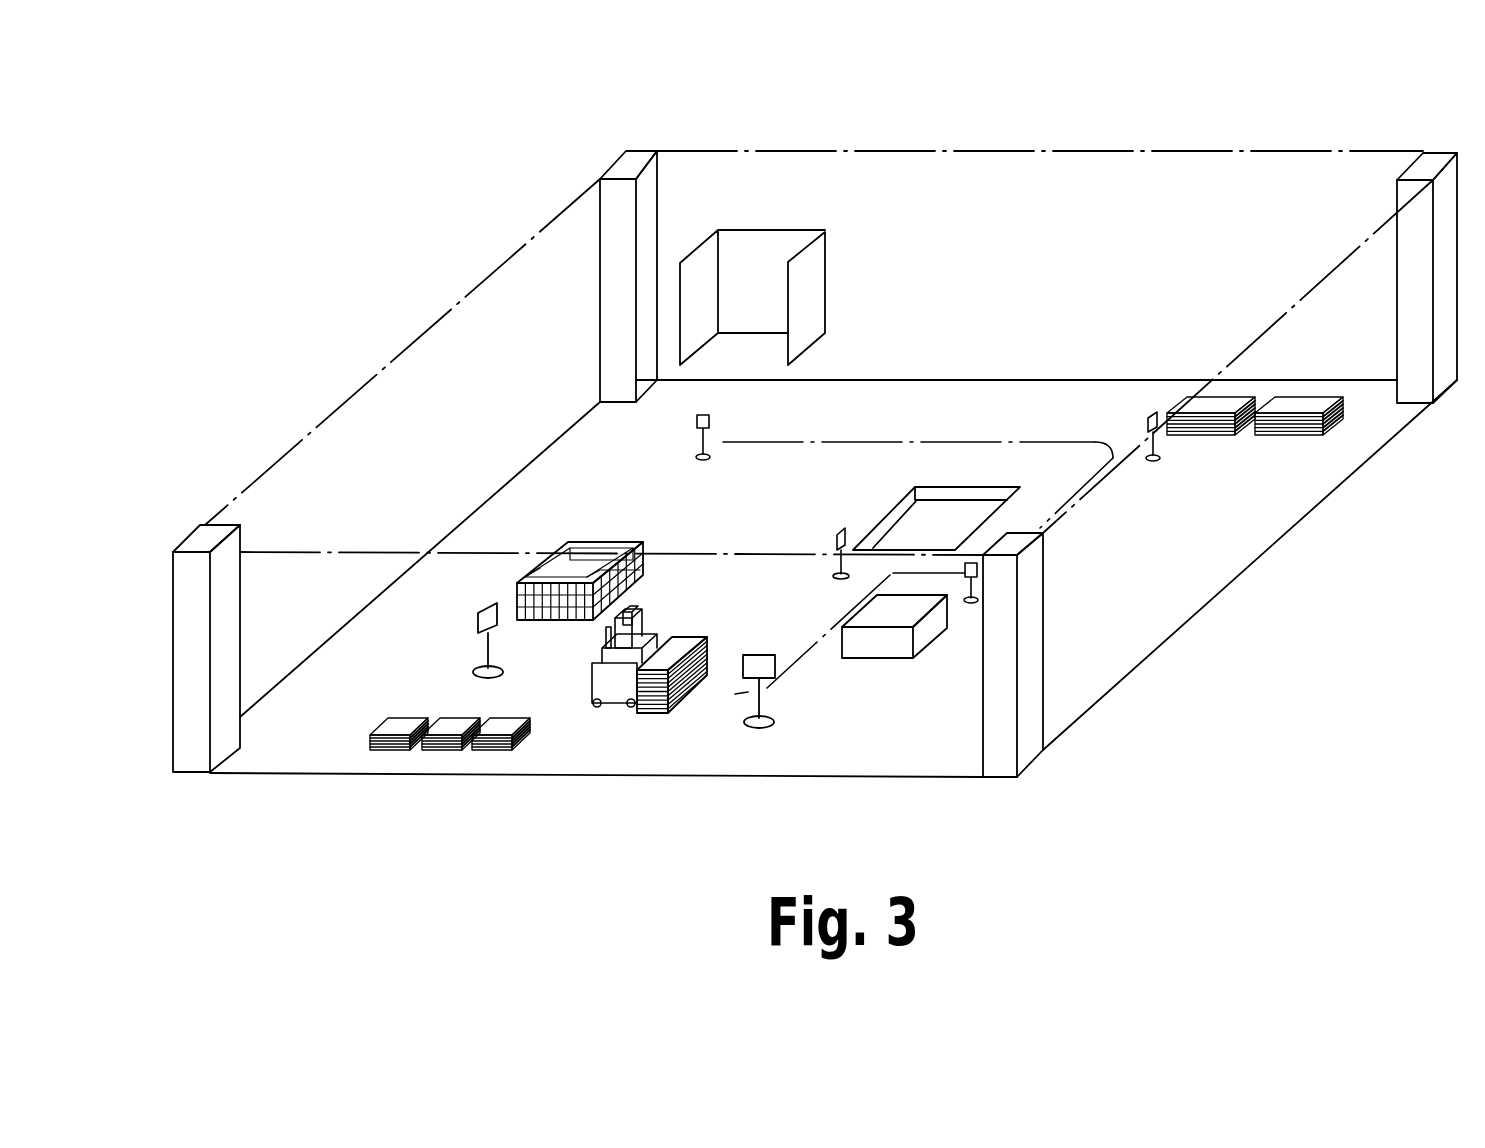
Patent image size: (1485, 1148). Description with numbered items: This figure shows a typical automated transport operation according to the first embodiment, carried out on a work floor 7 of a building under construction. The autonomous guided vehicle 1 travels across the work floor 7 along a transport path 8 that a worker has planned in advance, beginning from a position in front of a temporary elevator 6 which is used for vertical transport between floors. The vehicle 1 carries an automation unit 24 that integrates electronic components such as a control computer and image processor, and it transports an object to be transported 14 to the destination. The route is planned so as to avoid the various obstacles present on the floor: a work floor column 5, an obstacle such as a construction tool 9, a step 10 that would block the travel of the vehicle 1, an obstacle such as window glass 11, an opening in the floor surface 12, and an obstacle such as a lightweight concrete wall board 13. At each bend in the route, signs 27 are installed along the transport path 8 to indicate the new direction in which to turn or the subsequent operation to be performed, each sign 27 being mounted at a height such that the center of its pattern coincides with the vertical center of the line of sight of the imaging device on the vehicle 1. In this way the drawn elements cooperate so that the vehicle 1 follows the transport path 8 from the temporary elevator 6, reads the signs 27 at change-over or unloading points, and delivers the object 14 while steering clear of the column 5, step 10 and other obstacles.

The autonomous guided vehicle 1 is at (622, 685).
The work floor column 5 is at (1045, 662).
The temporary elevator 6 is at (743, 230).
The work floor 7 is at (1088, 400).
The transport path 8 is at (983, 442).
The obstacle such as a construction tool 9 is at (600, 542).
The step 10 is at (880, 660).
The obstacle such as window glass 11 is at (383, 752).
The opening in the floor surface 12 is at (878, 522).
The obstacle such as a lightweight concrete wall board 13 is at (1190, 395).
The object to be transported 14 is at (705, 642).
The automation unit 24 is at (645, 630).
The sign 27 is at (487, 645).